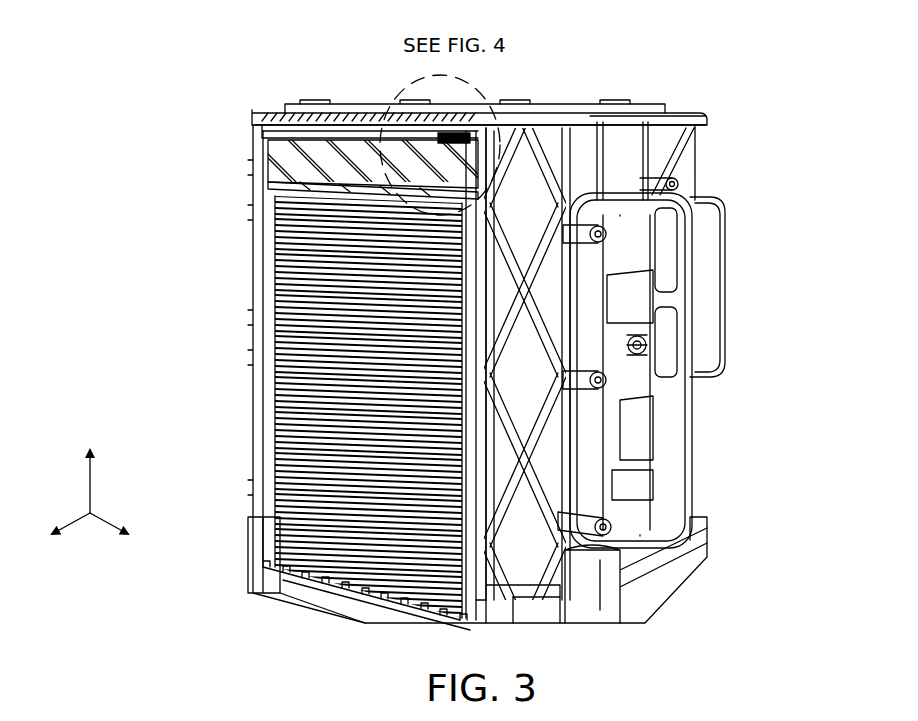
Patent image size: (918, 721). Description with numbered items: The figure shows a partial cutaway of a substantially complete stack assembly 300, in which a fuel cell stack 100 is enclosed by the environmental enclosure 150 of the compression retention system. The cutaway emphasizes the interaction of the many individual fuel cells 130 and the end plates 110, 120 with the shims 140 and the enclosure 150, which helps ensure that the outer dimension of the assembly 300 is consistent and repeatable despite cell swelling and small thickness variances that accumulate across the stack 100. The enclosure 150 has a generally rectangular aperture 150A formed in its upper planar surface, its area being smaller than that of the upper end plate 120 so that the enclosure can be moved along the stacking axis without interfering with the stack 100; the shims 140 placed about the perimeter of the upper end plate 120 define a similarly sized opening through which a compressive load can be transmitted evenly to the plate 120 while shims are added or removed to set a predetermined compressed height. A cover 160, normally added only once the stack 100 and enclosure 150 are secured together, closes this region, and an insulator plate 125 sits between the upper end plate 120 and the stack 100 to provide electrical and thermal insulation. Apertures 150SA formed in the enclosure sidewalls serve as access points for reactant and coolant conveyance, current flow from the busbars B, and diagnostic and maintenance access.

The stack assembly 300 is at (300, 56).
The fuel cell stack 100 is at (207, 140).
The end plate 110 is at (320, 592).
The upper end plate 120 is at (368, 164).
The insulator plate 125 is at (272, 179).
The fuel cells 130 is at (368, 410).
The shims 140 is at (455, 137).
The environmental enclosure 150 is at (526, 375).
The aperture 150A is at (352, 125).
The apertures 150SA is at (686, 436).
The cover 160 is at (252, 113).
The busbars B is at (622, 215).